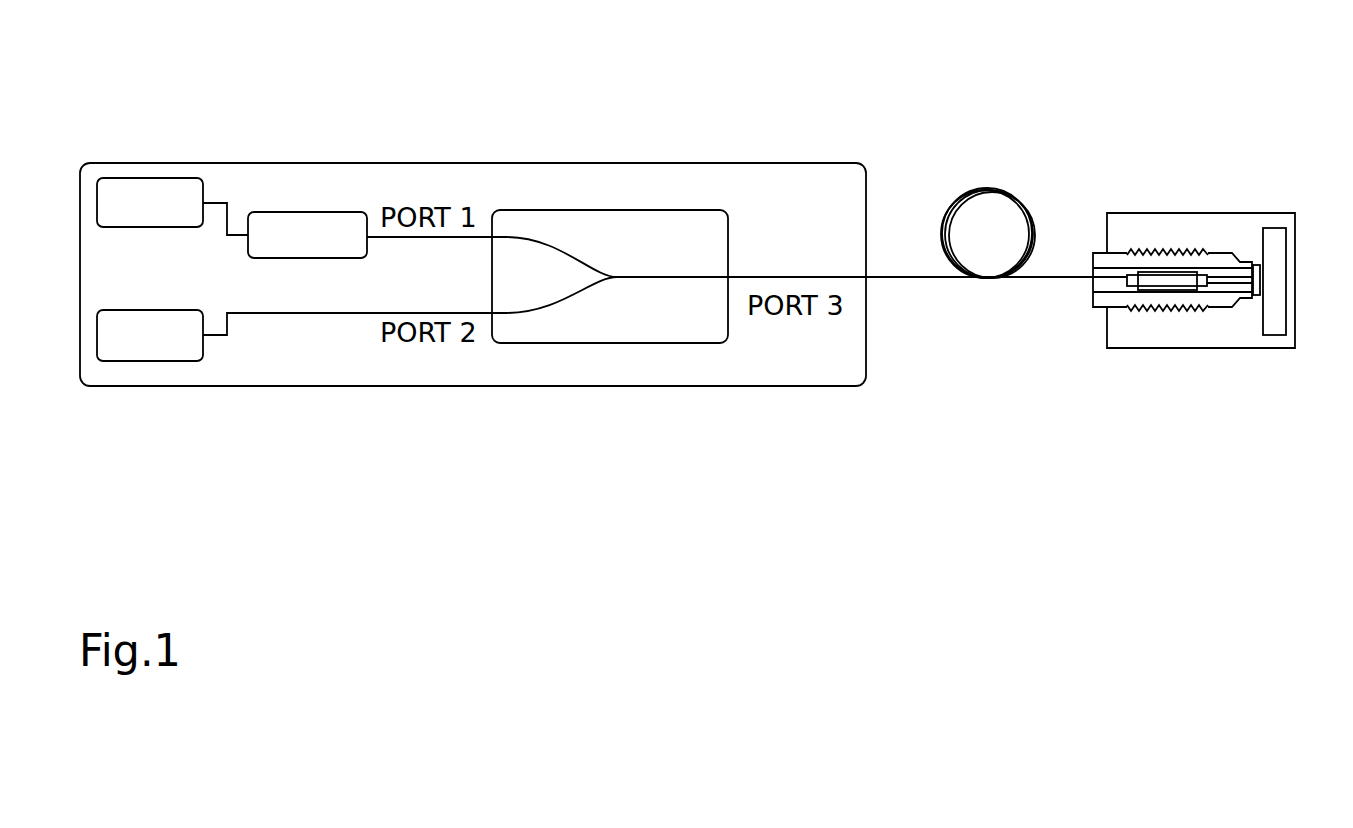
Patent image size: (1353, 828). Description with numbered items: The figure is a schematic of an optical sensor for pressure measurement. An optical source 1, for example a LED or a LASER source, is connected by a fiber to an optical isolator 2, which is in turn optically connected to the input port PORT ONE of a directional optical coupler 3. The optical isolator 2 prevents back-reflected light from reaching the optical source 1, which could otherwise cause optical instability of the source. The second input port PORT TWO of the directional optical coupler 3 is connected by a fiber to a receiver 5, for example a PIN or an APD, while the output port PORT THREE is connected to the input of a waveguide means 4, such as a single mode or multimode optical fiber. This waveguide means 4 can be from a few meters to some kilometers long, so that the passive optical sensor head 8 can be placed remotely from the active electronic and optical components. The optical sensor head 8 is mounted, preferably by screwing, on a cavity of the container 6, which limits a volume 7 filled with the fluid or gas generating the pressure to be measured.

The optical source 1 is at (170, 190).
The optical isolator 2 is at (298, 228).
The directional optical coupler 3 is at (620, 228).
The waveguide means 4 is at (982, 212).
The receiver 5 is at (128, 348).
The container 6 is at (1220, 232).
The volume 7 is at (1277, 280).
The optical sensor head 8 is at (1223, 293).